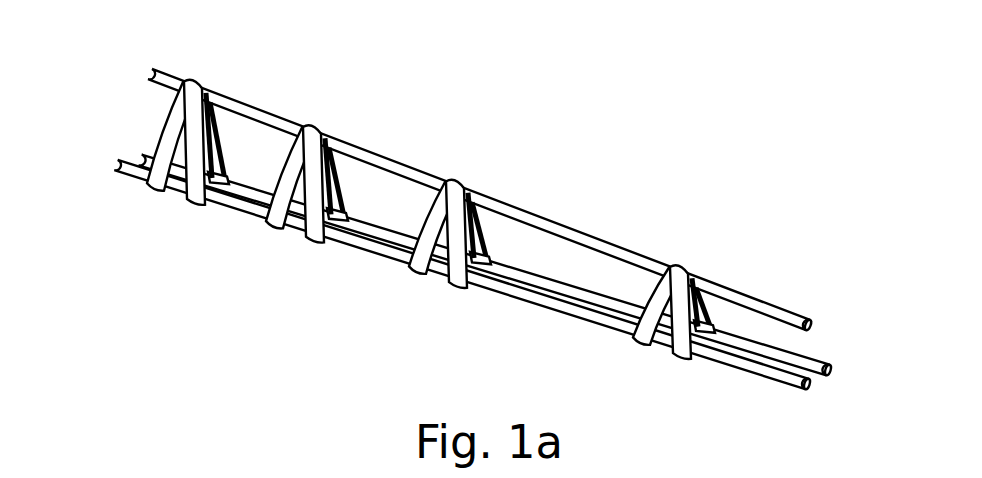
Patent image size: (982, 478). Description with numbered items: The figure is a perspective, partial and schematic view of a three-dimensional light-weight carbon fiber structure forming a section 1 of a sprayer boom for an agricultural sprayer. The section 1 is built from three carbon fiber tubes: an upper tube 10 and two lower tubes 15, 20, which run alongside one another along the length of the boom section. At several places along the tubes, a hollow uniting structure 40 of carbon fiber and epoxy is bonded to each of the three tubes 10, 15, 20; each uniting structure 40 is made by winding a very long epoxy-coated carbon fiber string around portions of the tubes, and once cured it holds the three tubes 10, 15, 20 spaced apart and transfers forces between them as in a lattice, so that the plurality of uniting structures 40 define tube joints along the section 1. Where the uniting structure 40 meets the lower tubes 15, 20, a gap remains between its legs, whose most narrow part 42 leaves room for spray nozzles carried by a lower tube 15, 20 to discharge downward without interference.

The section 1 is at (472, 241).
The upper tube 10 is at (573, 230).
The lower tube 15 is at (813, 366).
The lower tube 20 is at (768, 372).
The uniting structure 40 is at (142, 121).
The most narrow part of the gap 42 is at (292, 170).